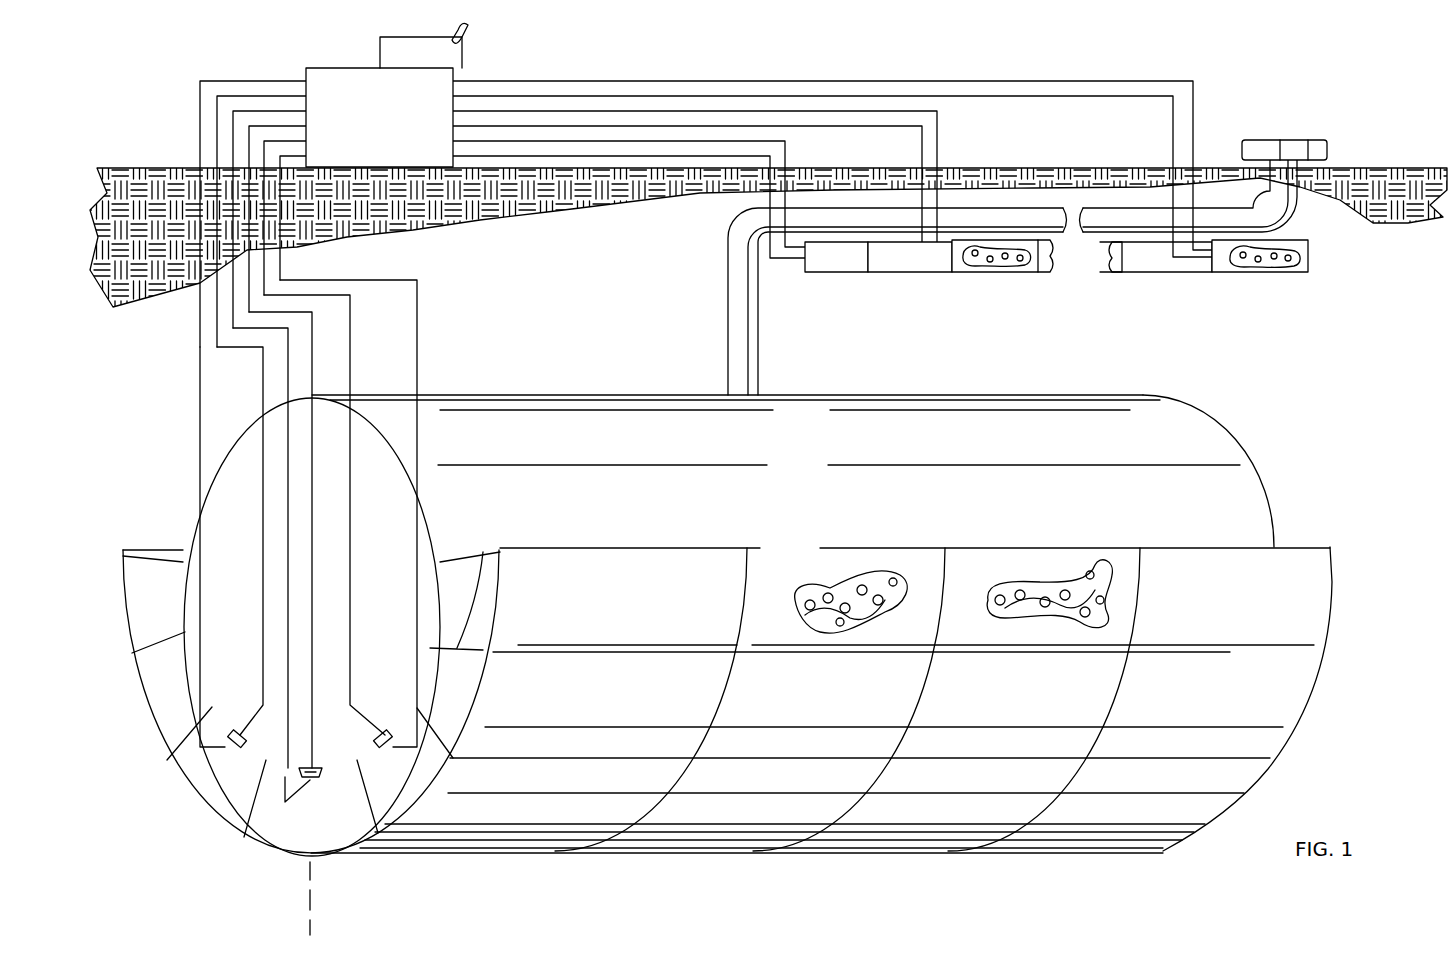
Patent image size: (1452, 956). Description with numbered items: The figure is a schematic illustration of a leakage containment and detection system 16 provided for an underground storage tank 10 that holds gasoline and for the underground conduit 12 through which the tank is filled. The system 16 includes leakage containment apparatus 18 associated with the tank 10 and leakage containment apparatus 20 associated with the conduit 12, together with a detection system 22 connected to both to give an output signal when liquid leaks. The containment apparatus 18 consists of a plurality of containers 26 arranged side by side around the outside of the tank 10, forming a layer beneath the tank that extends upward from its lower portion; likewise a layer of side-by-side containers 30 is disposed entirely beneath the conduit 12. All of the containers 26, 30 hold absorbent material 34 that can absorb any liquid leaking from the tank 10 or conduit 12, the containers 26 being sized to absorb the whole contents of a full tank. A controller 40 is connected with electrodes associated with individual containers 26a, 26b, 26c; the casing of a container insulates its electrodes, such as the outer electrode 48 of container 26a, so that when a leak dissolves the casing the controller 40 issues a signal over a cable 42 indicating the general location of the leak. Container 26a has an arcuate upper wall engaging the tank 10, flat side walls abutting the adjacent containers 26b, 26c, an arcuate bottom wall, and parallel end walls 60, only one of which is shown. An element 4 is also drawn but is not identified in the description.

The sensor 4 is at (835, 582).
The underground storage tank 10 is at (1240, 437).
The underground conduit 12 is at (1010, 205).
The leakage containment and detection system 16 is at (170, 420).
The leakage containment apparatus 18 is at (172, 775).
The leakage containment apparatus 20 is at (1078, 290).
The detection system 22 is at (190, 92).
The containers 26 is at (167, 702).
The container 26a is at (332, 833).
The container 26b is at (218, 797).
The container 26c is at (387, 795).
The containers 30 is at (830, 262).
The absorbent material 34 is at (1000, 270).
The controller 40 is at (445, 77).
The cable 42 is at (380, 52).
The electrode 48 is at (313, 766).
The end walls 60 is at (270, 822).